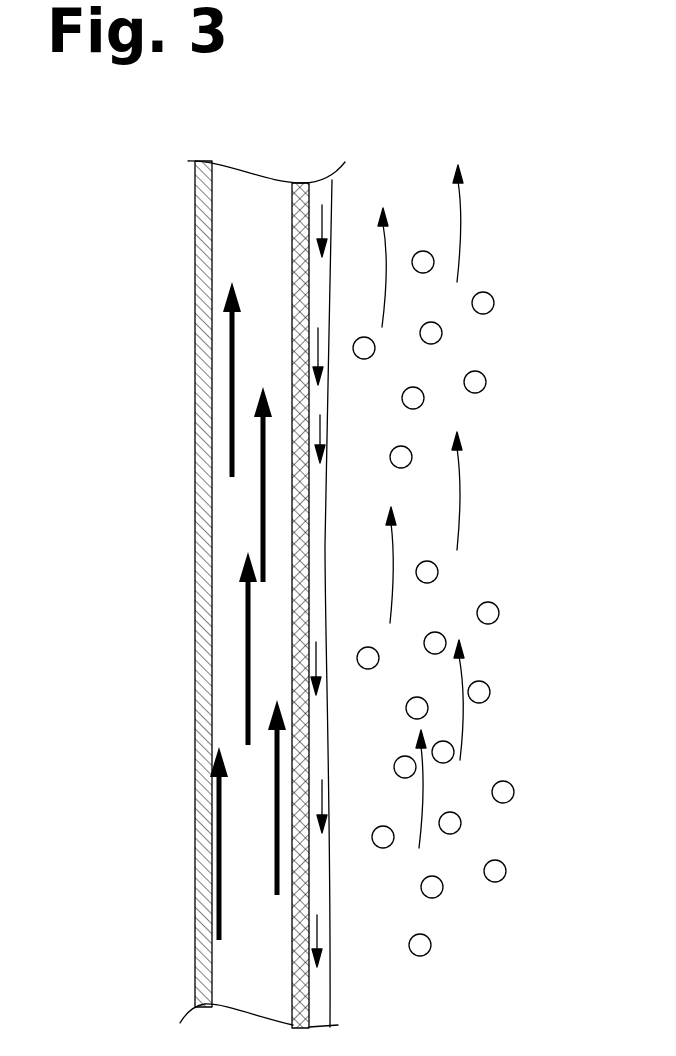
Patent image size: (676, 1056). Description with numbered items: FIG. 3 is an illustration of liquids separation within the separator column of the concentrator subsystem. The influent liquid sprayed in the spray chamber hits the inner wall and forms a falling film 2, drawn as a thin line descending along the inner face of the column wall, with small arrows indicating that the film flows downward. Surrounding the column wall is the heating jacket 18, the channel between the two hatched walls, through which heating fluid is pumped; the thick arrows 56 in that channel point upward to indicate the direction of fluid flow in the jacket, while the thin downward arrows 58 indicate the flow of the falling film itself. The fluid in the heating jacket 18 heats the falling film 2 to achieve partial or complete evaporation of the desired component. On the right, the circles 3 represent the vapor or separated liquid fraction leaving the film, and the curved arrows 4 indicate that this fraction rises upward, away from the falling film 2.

The heating jacket 18 is at (235, 190).
The upward flow in channel 56 is at (232, 352).
The downward flow along membrane 58 is at (322, 221).
The falling film 2 is at (325, 545).
The bubbles / particles 3 is at (496, 299).
The upward flow of fluid 4 is at (463, 503).